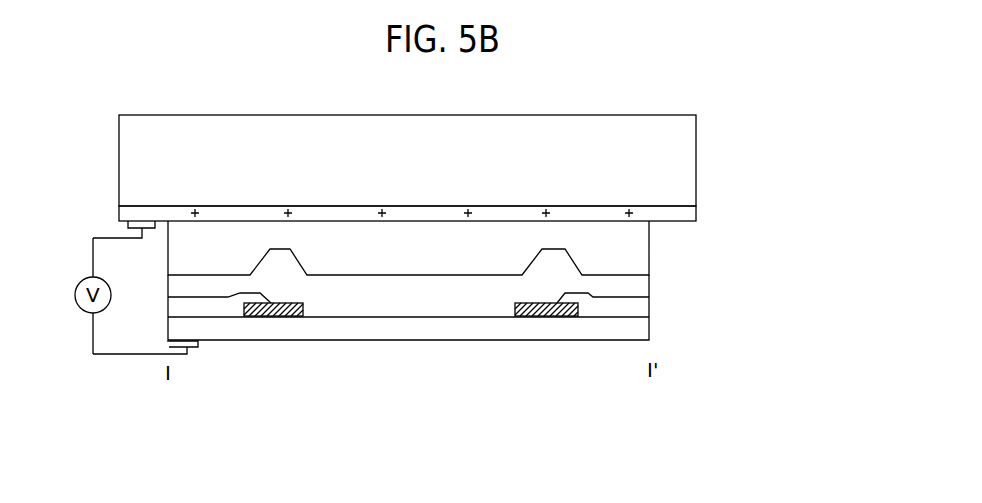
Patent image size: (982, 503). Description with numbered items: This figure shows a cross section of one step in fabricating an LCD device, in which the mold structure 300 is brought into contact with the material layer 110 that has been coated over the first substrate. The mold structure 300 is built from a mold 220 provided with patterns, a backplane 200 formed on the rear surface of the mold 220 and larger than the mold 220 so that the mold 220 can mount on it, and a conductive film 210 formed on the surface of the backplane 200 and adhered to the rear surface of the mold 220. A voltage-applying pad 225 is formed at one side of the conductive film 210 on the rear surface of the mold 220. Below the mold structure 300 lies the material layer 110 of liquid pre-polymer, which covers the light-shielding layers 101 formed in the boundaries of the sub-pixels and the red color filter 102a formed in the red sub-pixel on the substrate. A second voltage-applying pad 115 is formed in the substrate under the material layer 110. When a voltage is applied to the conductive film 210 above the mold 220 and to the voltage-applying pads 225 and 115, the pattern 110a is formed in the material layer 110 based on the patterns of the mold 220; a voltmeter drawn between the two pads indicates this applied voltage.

The mold structure 300 is at (777, 115).
The backplane 200 is at (688, 166).
The conductive film 210 is at (688, 214).
The mold 220 is at (633, 243).
The pattern 110a is at (633, 287).
The light-shielding layer 101 is at (285, 314).
The red color filter 102a is at (203, 311).
The material layer 110 is at (432, 328).
The voltage-applying pad 225 is at (142, 223).
The voltage-applying pad 115 is at (165, 343).